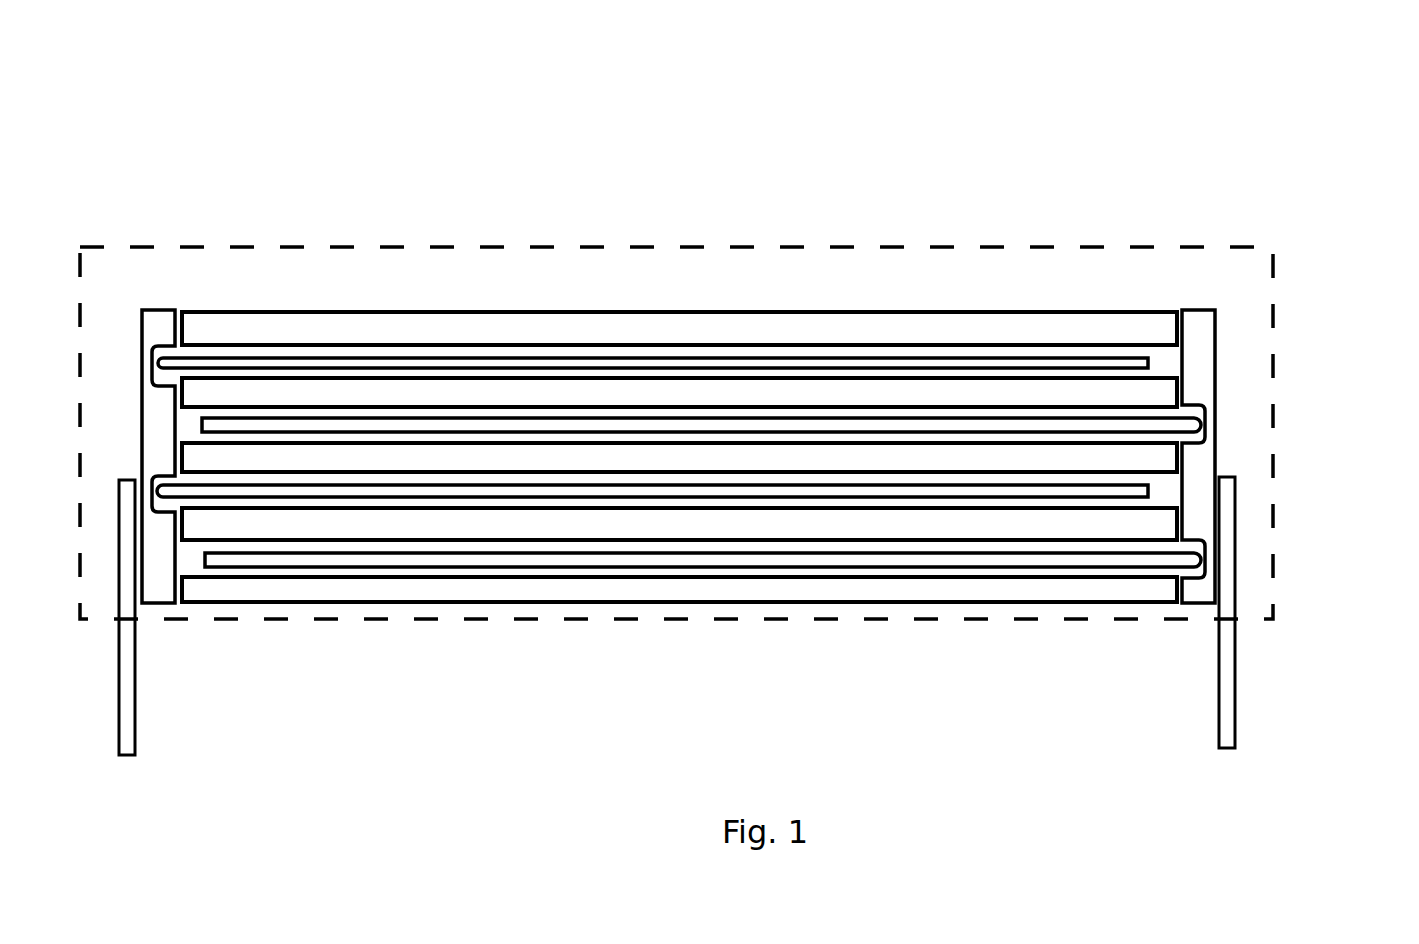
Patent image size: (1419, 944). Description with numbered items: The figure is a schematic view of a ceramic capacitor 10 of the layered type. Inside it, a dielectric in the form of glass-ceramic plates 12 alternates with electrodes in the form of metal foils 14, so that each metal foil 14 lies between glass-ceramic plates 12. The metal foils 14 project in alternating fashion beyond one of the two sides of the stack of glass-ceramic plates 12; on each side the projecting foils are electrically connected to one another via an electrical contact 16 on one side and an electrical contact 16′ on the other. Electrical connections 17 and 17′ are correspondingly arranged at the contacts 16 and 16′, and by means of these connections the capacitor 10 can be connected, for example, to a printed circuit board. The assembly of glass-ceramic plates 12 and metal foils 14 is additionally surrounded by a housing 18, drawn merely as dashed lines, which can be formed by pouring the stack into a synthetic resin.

The ceramic capacitor 10 is at (664, 228).
The glass-ceramic plate 12 is at (1133, 330).
The metal foil 14 is at (285, 367).
The electrical contact 16 is at (153, 332).
The electrical contact 16′ is at (1208, 344).
The electrical connection 17 is at (125, 695).
The electrical connection 17′ is at (1220, 693).
The housing 18 is at (1274, 461).